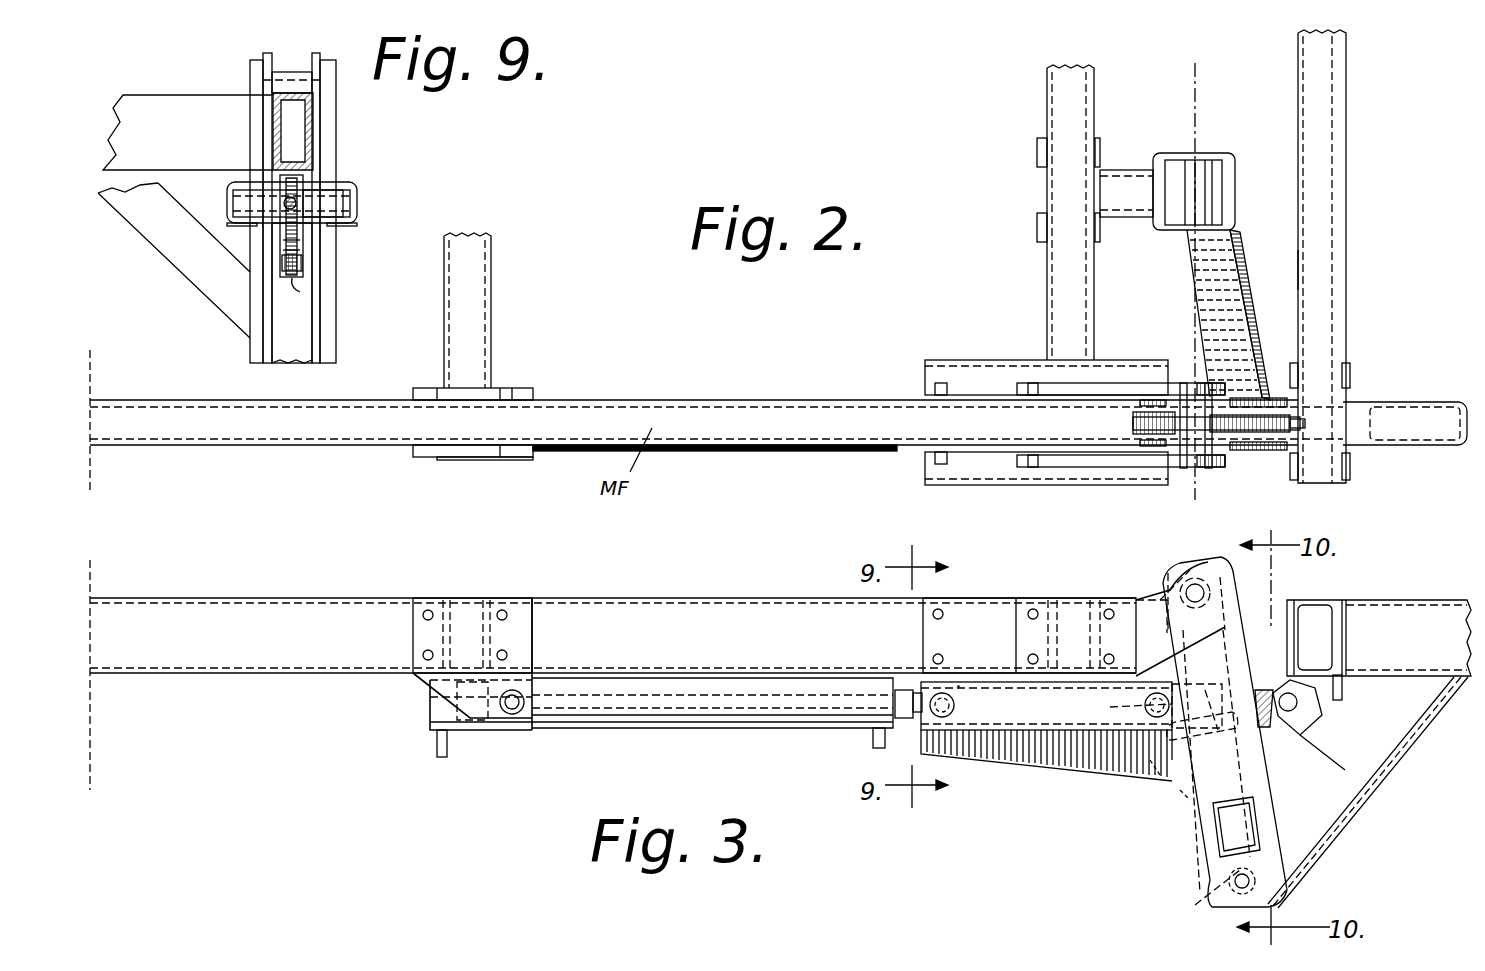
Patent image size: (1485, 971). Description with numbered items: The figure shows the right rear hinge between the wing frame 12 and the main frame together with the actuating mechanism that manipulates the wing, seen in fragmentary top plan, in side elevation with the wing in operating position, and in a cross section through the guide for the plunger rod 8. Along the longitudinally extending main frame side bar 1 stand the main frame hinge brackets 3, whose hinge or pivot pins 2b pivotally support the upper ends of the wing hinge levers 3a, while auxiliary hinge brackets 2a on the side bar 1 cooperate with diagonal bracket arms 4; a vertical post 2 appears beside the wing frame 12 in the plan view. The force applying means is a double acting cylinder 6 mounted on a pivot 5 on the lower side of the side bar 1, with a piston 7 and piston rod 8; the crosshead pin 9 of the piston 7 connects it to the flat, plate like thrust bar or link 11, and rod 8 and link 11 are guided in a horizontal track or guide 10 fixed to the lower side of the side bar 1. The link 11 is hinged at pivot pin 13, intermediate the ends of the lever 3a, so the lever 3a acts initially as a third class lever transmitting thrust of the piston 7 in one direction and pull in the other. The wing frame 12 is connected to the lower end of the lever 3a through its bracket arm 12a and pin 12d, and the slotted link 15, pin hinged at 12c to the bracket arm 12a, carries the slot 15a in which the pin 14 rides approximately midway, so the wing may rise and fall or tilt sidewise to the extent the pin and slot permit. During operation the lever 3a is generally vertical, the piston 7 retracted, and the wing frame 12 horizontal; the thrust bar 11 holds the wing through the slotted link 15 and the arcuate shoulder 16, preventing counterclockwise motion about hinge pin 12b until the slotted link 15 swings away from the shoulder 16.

In FIG. 9, the main frame side bar 1 is at (148, 98).
In FIG. 2, the main frame side bar 1 is at (1060, 270).
In FIG. 3, the main frame side bar 1 is at (338, 605).
In FIG. 2, the post 2 is at (1318, 109).
In FIG. 2, the auxiliary hinge bracket 2a is at (1125, 175).
In FIG. 9, the hinge pin 2b is at (286, 83).
In FIG. 2, the hinge pin 2b is at (1200, 152).
In FIG. 3, the hinge pin 2b is at (1192, 590).
In FIG. 9, the main frame hinge bracket 3 is at (252, 66).
In FIG. 2, the main frame hinge bracket 3 is at (1178, 383).
In FIG. 3, the main frame hinge bracket 3 is at (1152, 594).
In FIG. 9, the wing hinge lever 3a is at (316, 55).
In FIG. 2, the wing hinge lever 3a is at (1262, 394).
In FIG. 3, the wing hinge lever 3a is at (1196, 826).
In FIG. 9, the diagonal bracket arm 4 is at (200, 265).
In FIG. 2, the diagonal bracket arm 4 is at (1240, 290).
In FIG. 3, the diagonal bracket arm 4 is at (1210, 862).
In FIG. 3, the pivot 5 is at (512, 708).
In FIG. 2, the double acting cylinder 6 is at (822, 452).
In FIG. 3, the double acting cylinder 6 is at (740, 720).
In FIG. 3, the piston 7 is at (462, 730).
In FIG. 9, the piston rod 8 is at (284, 200).
In FIG. 3, the piston rod 8 is at (916, 693).
In FIG. 9, the crosshead pin 9 is at (236, 200).
In FIG. 3, the crosshead pin 9 is at (1000, 740).
In FIG. 9, the horizontal track 10 is at (358, 200).
In FIG. 2, the horizontal track 10 is at (960, 362).
In FIG. 3, the horizontal track 10 is at (1028, 727).
In FIG. 9, the thrust bar 11 is at (300, 266).
In FIG. 2, the thrust bar 11 is at (1130, 432).
In FIG. 3, the thrust bar 11 is at (1050, 758).
In FIG. 2, the wing frame 12 is at (1343, 272).
In FIG. 3, the wing frame 12 is at (1405, 605).
In FIG. 9, the wing frame bracket arm 12a is at (297, 333).
In FIG. 2, the wing frame bracket arm 12a is at (1435, 430).
In FIG. 3, the wing frame bracket arm 12a is at (1408, 736).
In FIG. 2, the hinge pin 12b is at (1275, 440).
In FIG. 3, the hinge pin 12b is at (1318, 716).
In FIG. 3, the pin hinge 12c is at (1300, 712).
In FIG. 3, the pin 12d is at (1256, 885).
In FIG. 3, the pivot pin 13 is at (1151, 706).
In FIG. 3, the pin 14 is at (1216, 702).
In FIG. 9, the slotted link 15 is at (300, 160).
In FIG. 2, the slotted link 15 is at (1256, 435).
In FIG. 3, the slotted link 15 is at (1150, 760).
In FIG. 3, the slot 15a is at (1258, 688).
In FIG. 9, the arcuate shoulder 16 is at (296, 285).
In FIG. 3, the arcuate shoulder 16 is at (1180, 790).